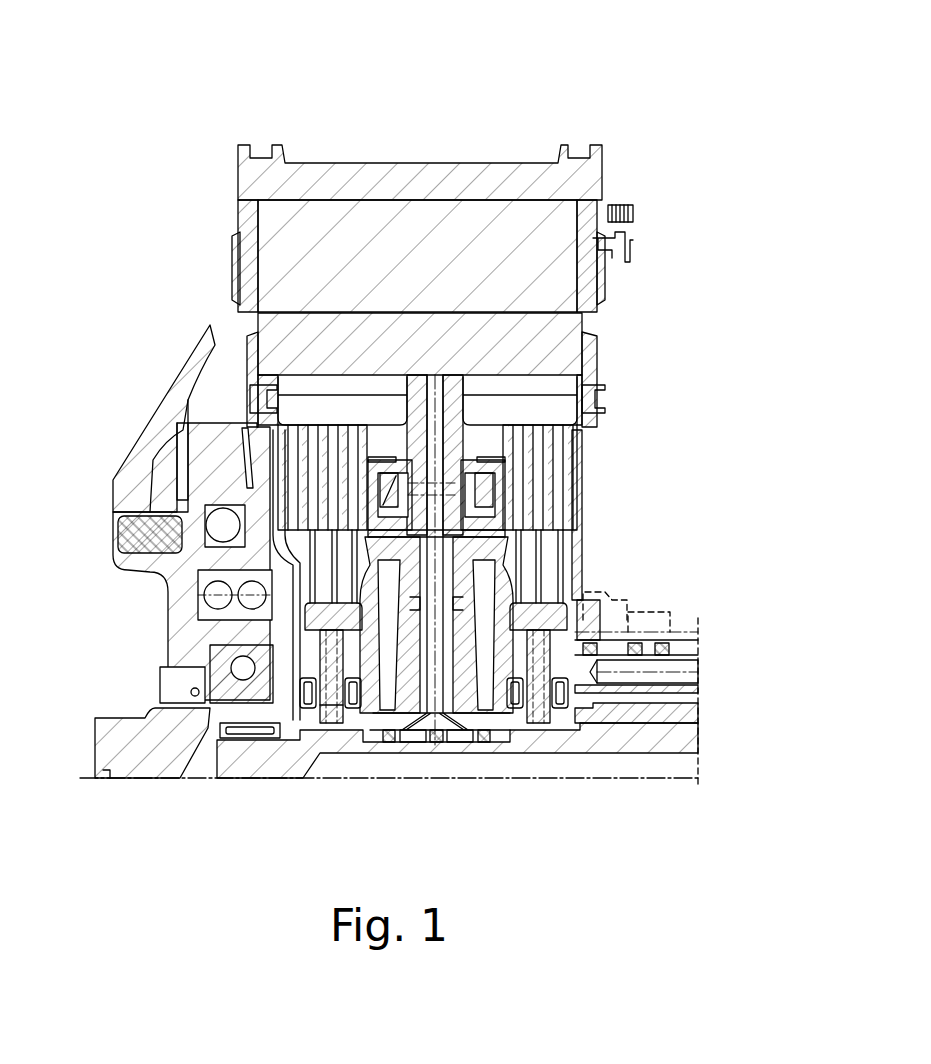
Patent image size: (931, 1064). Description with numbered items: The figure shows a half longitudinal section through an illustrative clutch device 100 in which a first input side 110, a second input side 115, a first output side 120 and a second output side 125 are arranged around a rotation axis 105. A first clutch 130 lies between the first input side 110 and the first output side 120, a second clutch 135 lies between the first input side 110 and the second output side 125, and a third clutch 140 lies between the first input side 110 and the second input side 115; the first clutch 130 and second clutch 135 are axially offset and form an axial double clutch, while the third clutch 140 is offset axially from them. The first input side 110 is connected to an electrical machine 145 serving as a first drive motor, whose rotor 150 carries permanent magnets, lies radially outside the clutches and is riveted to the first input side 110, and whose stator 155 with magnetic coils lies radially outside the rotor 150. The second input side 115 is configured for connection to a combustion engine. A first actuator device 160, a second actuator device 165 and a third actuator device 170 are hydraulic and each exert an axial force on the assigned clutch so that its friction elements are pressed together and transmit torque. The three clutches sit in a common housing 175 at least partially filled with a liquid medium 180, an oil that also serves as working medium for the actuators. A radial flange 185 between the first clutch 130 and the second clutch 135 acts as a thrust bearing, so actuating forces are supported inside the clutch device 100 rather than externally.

The clutch device 100 is at (187, 99).
The rotation axis 105 is at (682, 782).
The first input side 110 is at (543, 385).
The second input side 115 is at (118, 738).
The first output side 120 is at (645, 738).
The second output side 125 is at (672, 712).
The first clutch 130 is at (323, 800).
The second clutch 135 is at (548, 800).
The third clutch 140 is at (289, 800).
The electrical machine 145 is at (115, 258).
The rotor 150 is at (250, 347).
The stator 155 is at (265, 253).
The first actuator device 160 is at (389, 436).
The second actuator device 165 is at (481, 436).
The third actuator device 170 is at (120, 539).
The housing 175 is at (160, 437).
The liquid medium 180 is at (665, 588).
The radial flange 185 is at (452, 515).